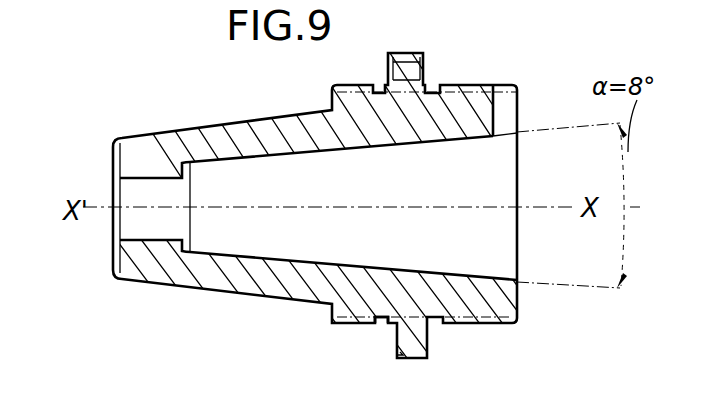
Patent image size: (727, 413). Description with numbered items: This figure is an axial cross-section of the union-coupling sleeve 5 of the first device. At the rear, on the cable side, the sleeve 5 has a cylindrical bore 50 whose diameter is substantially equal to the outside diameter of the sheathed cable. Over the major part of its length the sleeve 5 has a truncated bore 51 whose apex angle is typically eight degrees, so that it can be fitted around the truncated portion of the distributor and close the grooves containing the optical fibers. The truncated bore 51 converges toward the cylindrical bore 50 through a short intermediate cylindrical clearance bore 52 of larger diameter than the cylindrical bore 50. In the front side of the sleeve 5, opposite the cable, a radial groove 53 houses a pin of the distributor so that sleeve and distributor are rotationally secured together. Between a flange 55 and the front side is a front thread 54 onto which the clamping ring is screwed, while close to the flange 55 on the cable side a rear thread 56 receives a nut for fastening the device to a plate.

The sleeve 5 is at (167, 96).
The cylindrical bore 50 is at (140, 238).
The truncated bore 51 is at (350, 263).
The intermediate cylindrical clearance bore 52 is at (221, 254).
The radial groove 53 is at (518, 103).
The front thread 54 is at (500, 324).
The flange 55 is at (411, 52).
The rear thread 56 is at (355, 326).